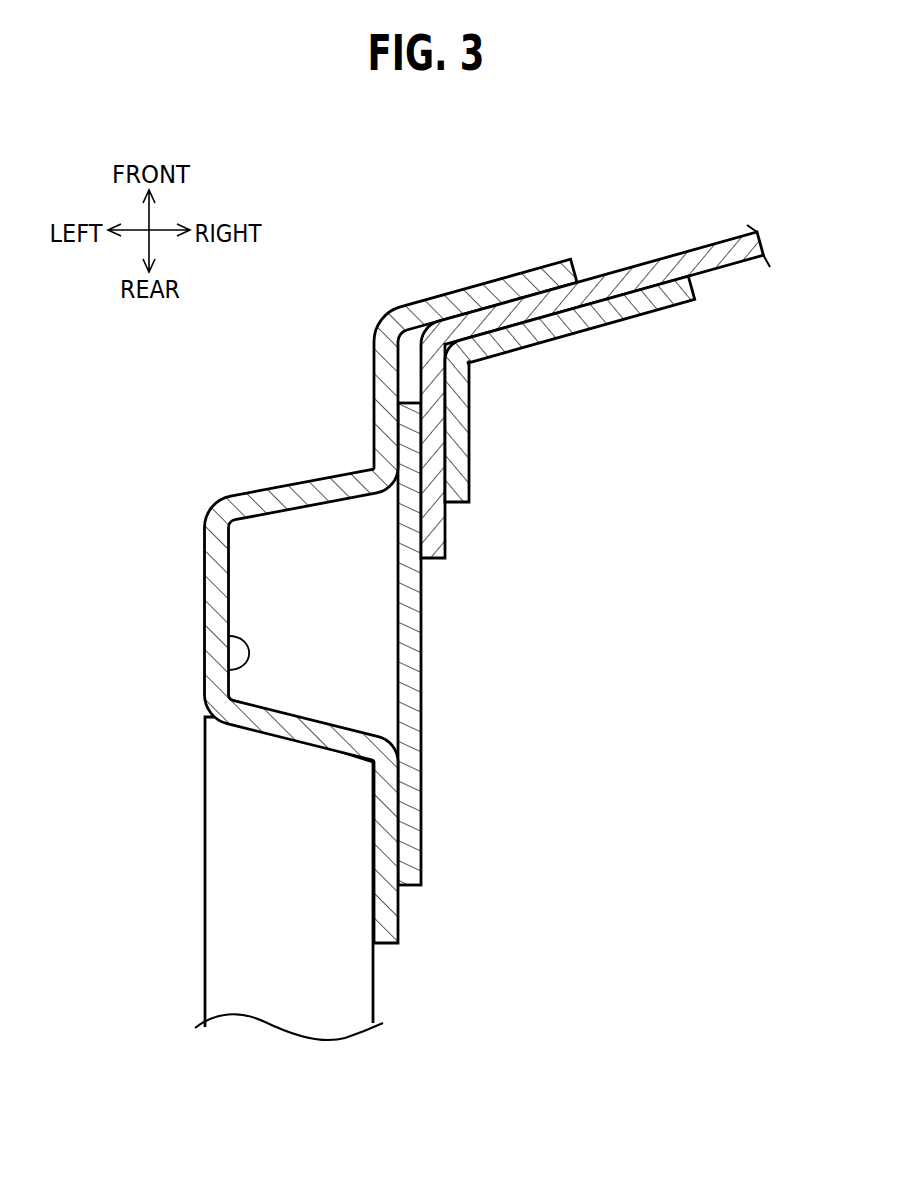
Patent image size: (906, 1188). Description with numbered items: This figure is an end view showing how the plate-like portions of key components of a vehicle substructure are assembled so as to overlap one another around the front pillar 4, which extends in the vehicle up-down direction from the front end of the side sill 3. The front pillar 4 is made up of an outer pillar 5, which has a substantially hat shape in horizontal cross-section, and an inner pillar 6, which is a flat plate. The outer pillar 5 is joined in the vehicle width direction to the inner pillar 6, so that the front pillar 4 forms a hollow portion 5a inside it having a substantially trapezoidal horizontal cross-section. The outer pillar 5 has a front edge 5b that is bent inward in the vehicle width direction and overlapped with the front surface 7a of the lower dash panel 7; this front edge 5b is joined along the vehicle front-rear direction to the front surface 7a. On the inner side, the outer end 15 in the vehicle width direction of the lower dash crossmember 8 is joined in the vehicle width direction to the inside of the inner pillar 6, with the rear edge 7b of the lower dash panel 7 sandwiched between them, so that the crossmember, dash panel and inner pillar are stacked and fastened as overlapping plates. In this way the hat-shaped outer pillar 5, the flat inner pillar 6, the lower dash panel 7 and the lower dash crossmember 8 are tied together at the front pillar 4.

The side sill 3 is at (205, 905).
The front pillar 4 is at (143, 527).
The outer pillar 5 is at (205, 617).
The hollow portion 5a is at (207, 662).
The front edge 5b is at (540, 270).
The inner pillar 6 is at (397, 593).
The lower dash panel 7 is at (657, 260).
The front surface 7a is at (482, 308).
The rear edge 7b is at (446, 522).
The lower dash crossmember 8 is at (647, 318).
The outer end 15 is at (470, 465).